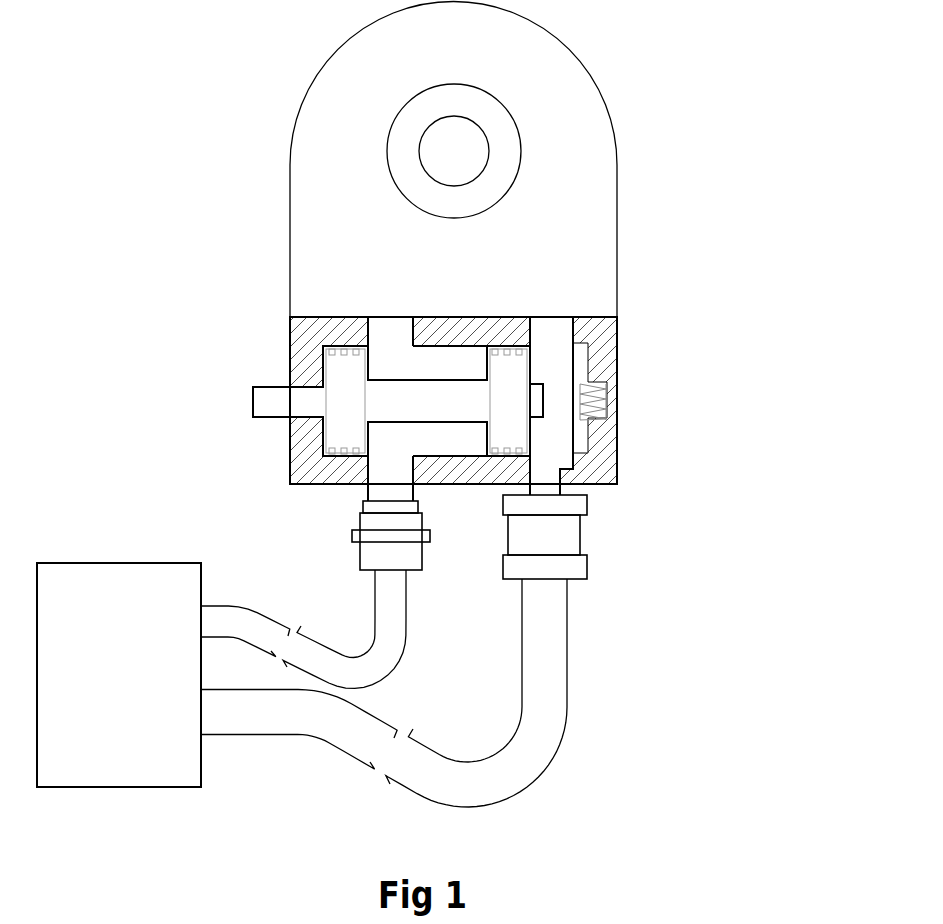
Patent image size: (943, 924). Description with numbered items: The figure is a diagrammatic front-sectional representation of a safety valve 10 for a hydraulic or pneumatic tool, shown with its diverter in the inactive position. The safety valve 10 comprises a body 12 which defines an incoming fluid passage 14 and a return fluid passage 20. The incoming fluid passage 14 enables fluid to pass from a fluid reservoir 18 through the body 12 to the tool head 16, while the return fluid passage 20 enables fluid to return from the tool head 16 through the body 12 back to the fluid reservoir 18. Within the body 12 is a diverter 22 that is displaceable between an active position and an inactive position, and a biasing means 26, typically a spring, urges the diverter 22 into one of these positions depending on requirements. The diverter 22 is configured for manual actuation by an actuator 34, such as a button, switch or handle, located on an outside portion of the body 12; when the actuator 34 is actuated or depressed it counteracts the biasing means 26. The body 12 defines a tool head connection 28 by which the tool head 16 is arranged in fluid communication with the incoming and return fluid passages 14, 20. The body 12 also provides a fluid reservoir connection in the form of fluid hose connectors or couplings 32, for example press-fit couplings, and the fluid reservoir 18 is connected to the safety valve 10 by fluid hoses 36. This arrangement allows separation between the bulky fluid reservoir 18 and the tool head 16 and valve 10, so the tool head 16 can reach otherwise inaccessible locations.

The safety valve 10 is at (655, 284).
The body 12 is at (603, 473).
The incoming fluid passage 14 is at (388, 469).
The tool head 16 is at (632, 166).
The fluid reservoir 18 is at (136, 684).
The return fluid passage 20 is at (548, 459).
The diverter 22 is at (390, 388).
The biasing means 26 is at (593, 399).
The tool head connection 28 is at (345, 303).
The fluid hose connectors or couplings 32 is at (368, 533).
The actuator 34 is at (275, 402).
The fluid hoses 36 is at (380, 658).